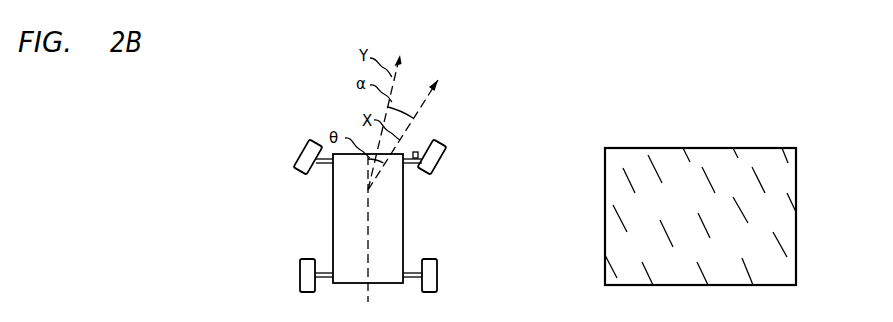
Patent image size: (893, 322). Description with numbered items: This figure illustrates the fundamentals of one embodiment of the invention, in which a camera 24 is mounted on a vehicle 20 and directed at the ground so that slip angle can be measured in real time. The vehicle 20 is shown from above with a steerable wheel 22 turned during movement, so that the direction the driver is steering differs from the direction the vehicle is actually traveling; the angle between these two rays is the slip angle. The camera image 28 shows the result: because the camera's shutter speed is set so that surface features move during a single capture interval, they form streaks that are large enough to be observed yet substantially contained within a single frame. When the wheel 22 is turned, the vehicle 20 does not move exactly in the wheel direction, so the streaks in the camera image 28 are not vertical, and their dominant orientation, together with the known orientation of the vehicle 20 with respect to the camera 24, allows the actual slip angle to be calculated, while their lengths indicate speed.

The vehicle 20 is at (405, 203).
The steerable front wheel 22 is at (443, 167).
The camera 24 is at (417, 151).
The camera image 28 is at (797, 248).